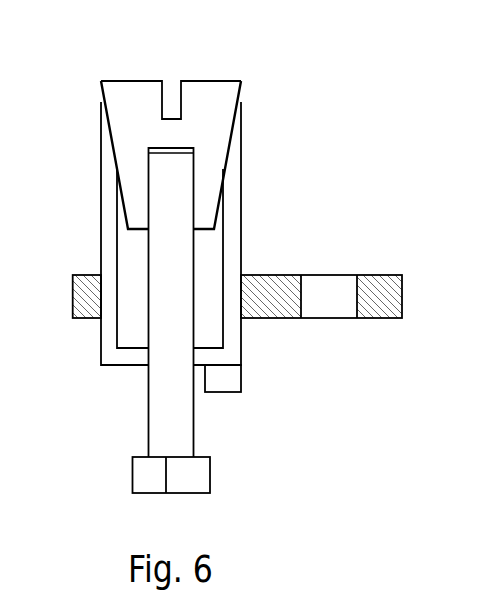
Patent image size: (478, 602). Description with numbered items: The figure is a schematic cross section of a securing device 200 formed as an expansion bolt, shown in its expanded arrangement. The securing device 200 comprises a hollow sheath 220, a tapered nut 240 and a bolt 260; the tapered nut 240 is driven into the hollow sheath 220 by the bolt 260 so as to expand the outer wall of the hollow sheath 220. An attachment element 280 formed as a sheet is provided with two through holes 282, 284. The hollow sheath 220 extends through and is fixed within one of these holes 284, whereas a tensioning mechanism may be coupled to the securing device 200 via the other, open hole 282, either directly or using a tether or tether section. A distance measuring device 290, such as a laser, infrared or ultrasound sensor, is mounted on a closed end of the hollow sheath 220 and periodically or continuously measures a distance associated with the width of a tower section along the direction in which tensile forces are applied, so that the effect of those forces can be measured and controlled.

The securing device 200 is at (80, 489).
The hollow sheath 220 is at (100, 347).
The tapered nut 240 is at (124, 90).
The bolt 260 is at (148, 415).
The attachment element 280 is at (378, 318).
The open hole 282 is at (332, 298).
The through hole 284 is at (101, 274).
The distance measuring device 290 is at (242, 395).